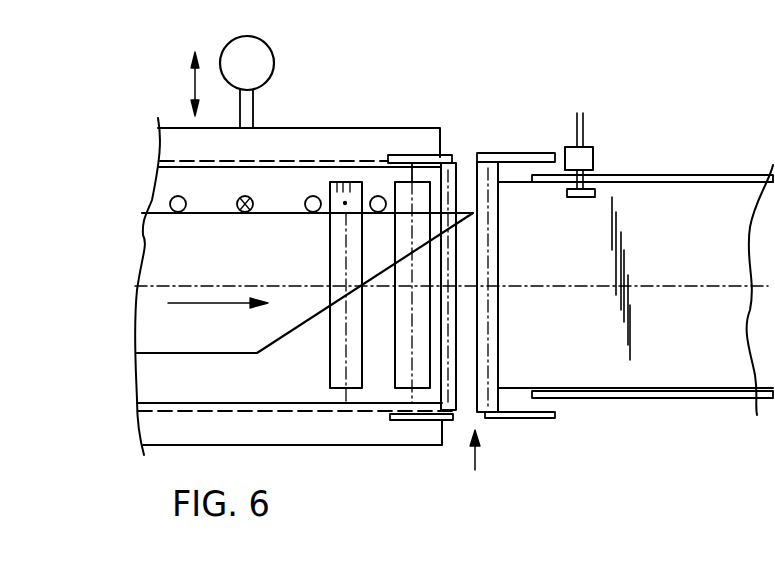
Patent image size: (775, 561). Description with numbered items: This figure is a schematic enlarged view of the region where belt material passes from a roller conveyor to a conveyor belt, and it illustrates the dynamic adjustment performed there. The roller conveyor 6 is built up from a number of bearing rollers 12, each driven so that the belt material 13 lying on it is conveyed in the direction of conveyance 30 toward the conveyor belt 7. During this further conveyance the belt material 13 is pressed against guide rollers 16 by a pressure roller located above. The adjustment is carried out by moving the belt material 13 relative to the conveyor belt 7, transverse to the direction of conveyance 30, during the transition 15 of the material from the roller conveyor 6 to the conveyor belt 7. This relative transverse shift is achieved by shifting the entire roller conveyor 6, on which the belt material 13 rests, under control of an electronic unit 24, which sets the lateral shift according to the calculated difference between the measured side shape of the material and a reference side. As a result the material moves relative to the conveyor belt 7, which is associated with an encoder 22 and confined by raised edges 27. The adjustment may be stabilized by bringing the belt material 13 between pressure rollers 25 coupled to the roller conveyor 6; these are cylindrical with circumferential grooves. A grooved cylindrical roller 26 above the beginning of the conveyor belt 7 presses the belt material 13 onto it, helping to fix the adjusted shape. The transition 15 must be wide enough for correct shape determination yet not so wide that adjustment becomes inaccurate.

The roller conveyor 6 is at (358, 185).
The conveyor belt 7 is at (712, 364).
The bearing roller 12 is at (336, 182).
The belt material 13 is at (165, 240).
The transition 15 is at (485, 481).
The guide rollers 16 is at (248, 196).
The encoder 22 is at (583, 158).
The electronic unit 24 is at (258, 60).
The pressure roller 25 is at (458, 210).
The cylindrical roller 26 is at (492, 168).
The raised edges 27 is at (697, 176).
The direction of conveyance 30 is at (178, 306).